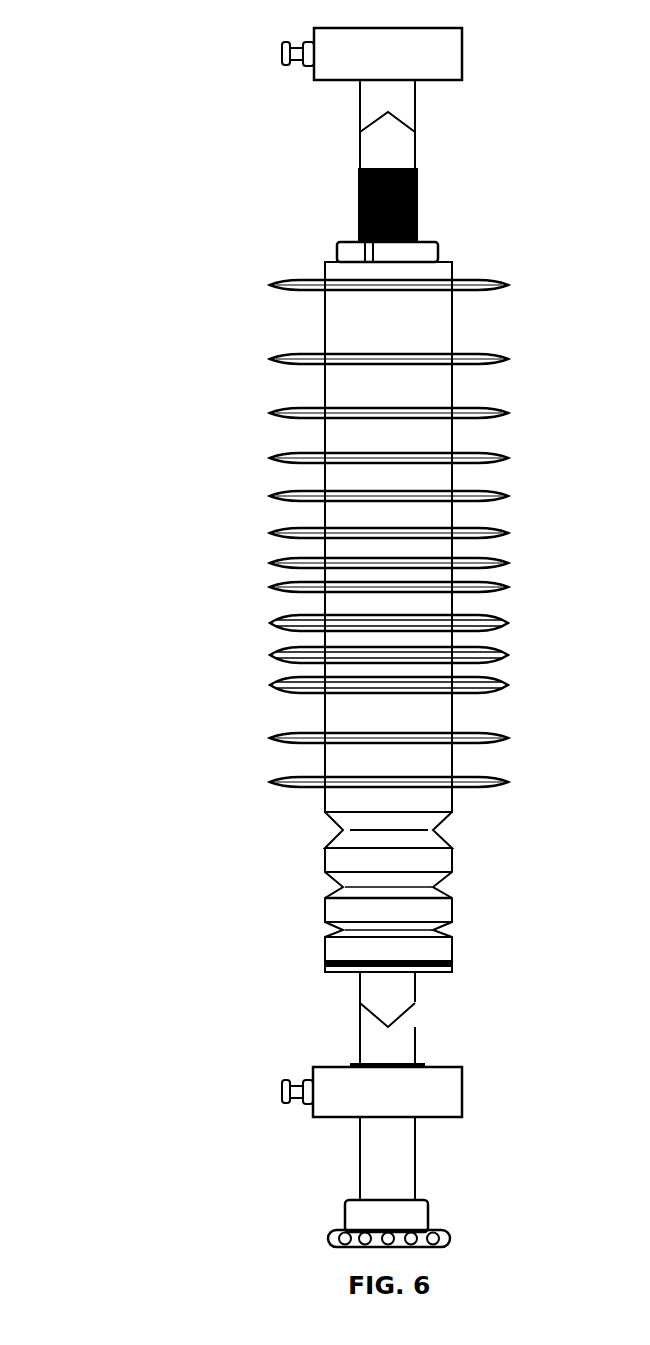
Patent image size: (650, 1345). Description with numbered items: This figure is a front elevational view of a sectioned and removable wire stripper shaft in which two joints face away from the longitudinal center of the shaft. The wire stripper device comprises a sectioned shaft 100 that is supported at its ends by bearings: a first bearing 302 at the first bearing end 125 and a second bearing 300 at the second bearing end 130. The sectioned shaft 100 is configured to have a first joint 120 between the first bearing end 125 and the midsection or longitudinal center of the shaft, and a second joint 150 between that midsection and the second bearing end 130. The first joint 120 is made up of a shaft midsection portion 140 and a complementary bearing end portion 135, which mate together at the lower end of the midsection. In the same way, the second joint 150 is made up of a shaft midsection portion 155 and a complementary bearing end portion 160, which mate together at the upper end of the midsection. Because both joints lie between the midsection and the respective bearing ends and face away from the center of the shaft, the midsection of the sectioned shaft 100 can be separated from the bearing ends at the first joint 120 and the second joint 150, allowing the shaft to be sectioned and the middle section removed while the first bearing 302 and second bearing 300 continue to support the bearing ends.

The sectioned shaft 100 is at (128, 485).
The first joint 120 is at (360, 1002).
The first bearing end 125 is at (405, 1204).
The second bearing end 130 is at (359, 91).
The complementary bearing end portion 135 is at (423, 1042).
The shaft midsection portion 140 is at (418, 991).
The second joint 150 is at (360, 125).
The shaft midsection portion 155 is at (422, 160).
The complementary bearing end portion 160 is at (408, 94).
The second bearing 300 is at (372, 54).
The first bearing 302 is at (372, 1092).